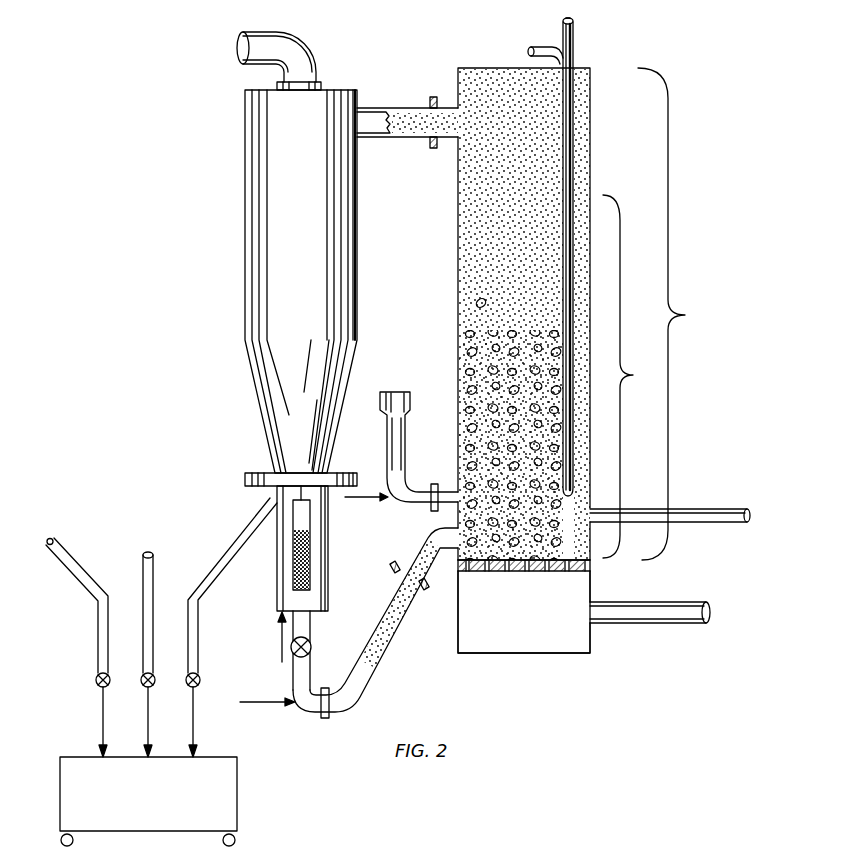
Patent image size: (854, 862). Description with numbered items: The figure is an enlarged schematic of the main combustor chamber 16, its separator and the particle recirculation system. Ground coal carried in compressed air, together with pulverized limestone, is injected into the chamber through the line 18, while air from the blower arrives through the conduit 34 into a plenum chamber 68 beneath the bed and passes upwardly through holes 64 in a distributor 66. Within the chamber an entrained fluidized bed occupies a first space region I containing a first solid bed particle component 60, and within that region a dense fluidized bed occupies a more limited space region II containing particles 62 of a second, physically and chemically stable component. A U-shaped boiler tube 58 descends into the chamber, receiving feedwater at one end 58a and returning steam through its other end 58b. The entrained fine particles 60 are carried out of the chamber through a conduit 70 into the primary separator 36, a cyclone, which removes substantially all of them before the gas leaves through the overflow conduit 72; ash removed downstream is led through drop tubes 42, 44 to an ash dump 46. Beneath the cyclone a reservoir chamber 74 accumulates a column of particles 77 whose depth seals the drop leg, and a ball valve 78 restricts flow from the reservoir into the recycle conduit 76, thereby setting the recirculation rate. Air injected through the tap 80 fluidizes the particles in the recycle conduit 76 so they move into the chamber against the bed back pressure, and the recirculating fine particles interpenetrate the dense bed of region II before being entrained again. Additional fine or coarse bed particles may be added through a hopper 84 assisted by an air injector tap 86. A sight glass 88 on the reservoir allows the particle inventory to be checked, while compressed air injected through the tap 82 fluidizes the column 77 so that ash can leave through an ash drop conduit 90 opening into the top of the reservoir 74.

The main combustor chamber 16 is at (457, 211).
The line 18 is at (690, 511).
The conduit 34 is at (640, 601).
The primary separator 36 is at (244, 158).
The drop tube 42 is at (70, 577).
The drop tube 44 is at (143, 560).
The ash dump 46 is at (148, 801).
The boiler tube 58 is at (573, 117).
The end of boiler tube 58a is at (537, 46).
The other end of boiler tube 58b is at (575, 33).
The first solid bed particle component 60 is at (483, 165).
The particles of second component 62 is at (478, 300).
The holes 64 is at (512, 570).
The distributor 66 is at (526, 571).
The plenum chamber 68 is at (519, 652).
The conduit 70 is at (430, 105).
The conduit 72 is at (290, 50).
The reservoir chamber 74 is at (328, 535).
The recycle conduit 76 is at (393, 609).
The column of particles 77 is at (312, 556).
The ball valve 78 is at (311, 647).
The tap 80 is at (258, 704).
The air injector tap 82 is at (280, 647).
The hopper 84 is at (406, 434).
The air injector tap 86 is at (357, 499).
The sight glass 88 is at (303, 508).
The ash drop conduit 90 is at (240, 548).
The first space region I is at (667, 314).
The more limited space region II is at (625, 376).